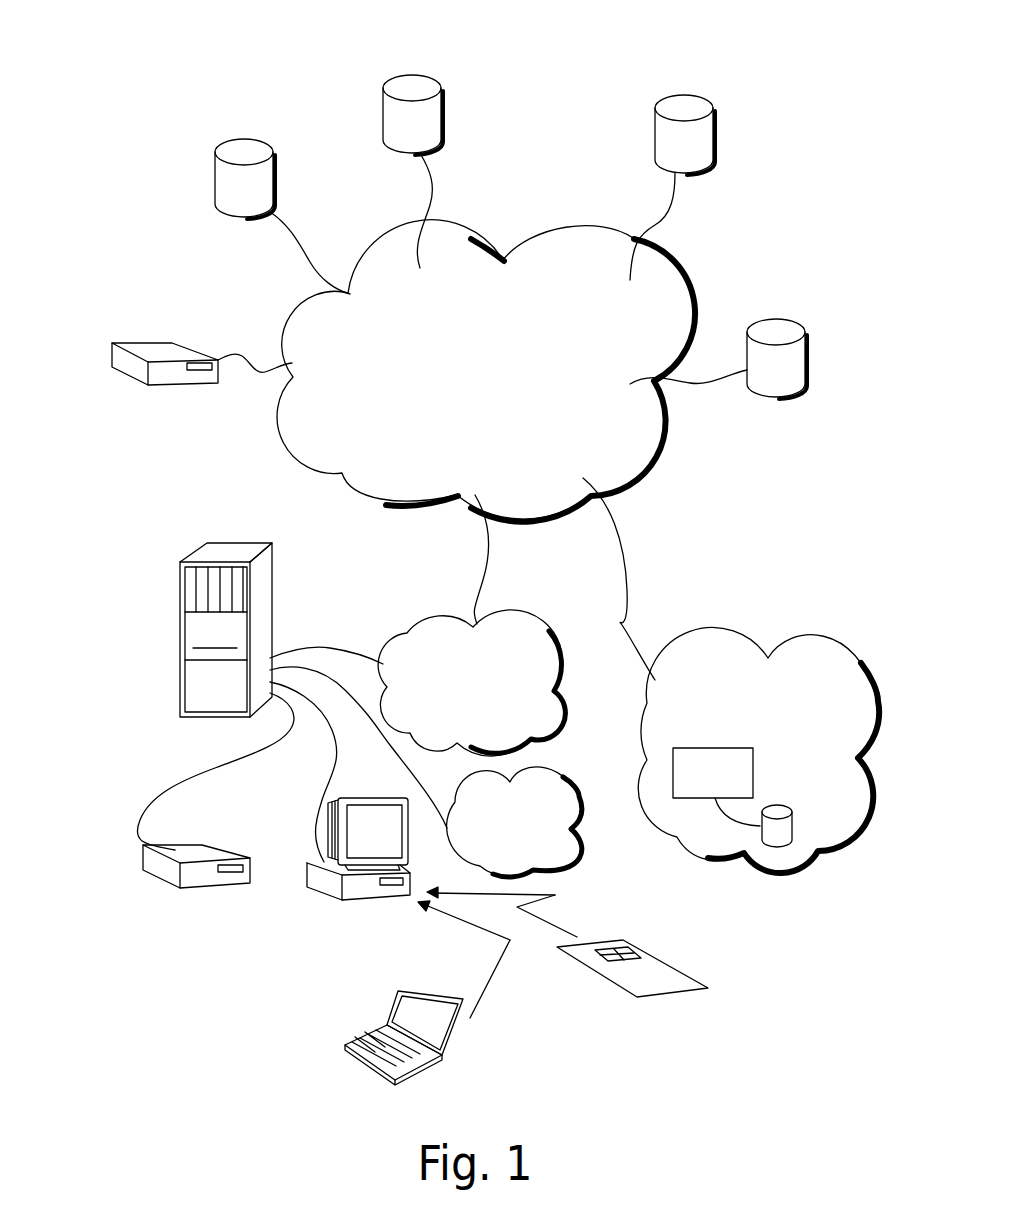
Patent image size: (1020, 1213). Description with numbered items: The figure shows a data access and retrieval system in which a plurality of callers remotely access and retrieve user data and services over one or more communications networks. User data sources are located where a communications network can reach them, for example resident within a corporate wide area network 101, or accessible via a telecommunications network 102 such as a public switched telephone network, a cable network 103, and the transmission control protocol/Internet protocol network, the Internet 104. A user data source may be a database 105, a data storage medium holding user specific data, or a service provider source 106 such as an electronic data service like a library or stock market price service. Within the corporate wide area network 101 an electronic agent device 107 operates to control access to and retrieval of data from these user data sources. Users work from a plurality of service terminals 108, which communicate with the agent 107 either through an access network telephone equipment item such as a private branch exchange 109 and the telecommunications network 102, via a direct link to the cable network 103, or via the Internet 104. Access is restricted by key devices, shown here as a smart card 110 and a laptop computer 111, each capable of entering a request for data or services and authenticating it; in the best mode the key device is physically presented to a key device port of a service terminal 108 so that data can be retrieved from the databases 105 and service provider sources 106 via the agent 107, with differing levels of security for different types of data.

The corporate wide area network 101 is at (812, 636).
The telecommunications network 102 is at (479, 447).
The cable network 103 is at (457, 647).
The transmission control protocol/Internet protocol network (Internet) 104 is at (515, 797).
The database 105 is at (152, 390).
The service provider source 106 is at (216, 190).
The electronic agent device 107 is at (810, 768).
The service terminal 108 is at (208, 887).
The private branch exchange (PBX) 109 is at (180, 641).
The smart card 110 is at (650, 995).
The laptop computer 111 is at (443, 1058).